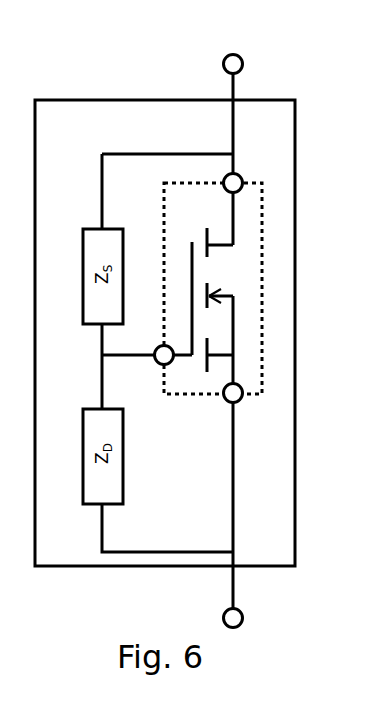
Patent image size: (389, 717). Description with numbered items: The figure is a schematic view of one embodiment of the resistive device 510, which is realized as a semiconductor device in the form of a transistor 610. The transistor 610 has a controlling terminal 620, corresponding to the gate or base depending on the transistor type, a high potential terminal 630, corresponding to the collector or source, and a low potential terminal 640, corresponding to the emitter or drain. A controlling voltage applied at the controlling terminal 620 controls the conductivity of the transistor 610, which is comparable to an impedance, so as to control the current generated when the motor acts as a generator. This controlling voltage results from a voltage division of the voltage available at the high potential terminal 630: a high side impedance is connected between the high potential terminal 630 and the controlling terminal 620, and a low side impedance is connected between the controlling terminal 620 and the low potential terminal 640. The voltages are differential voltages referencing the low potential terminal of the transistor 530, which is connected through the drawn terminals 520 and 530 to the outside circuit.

The resistive device 510 is at (165, 333).
The first terminal 520 is at (223, 63).
The transistor 530 is at (243, 613).
The transistor 610 is at (213, 288).
The controlling terminal 620 is at (158, 361).
The high potential terminal 630 is at (237, 176).
The low potential terminal 640 is at (226, 401).